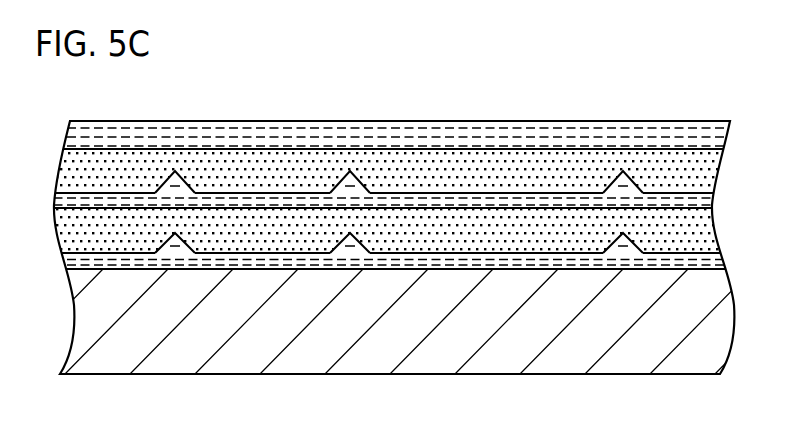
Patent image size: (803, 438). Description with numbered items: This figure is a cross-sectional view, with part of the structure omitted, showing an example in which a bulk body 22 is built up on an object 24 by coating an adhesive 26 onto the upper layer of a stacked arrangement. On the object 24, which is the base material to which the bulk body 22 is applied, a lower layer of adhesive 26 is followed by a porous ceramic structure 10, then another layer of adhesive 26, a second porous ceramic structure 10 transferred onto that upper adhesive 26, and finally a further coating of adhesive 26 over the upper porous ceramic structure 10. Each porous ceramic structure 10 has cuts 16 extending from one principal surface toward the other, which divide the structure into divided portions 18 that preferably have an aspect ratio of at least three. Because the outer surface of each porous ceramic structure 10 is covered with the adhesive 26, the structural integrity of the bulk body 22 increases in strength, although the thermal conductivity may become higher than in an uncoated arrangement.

The porous ceramic structure 10 is at (332, 141).
The cut 16 is at (160, 188).
The divided portion 18 is at (278, 167).
The bulk body 22 is at (549, 117).
The object 24 is at (377, 343).
The adhesive 26 is at (210, 140).